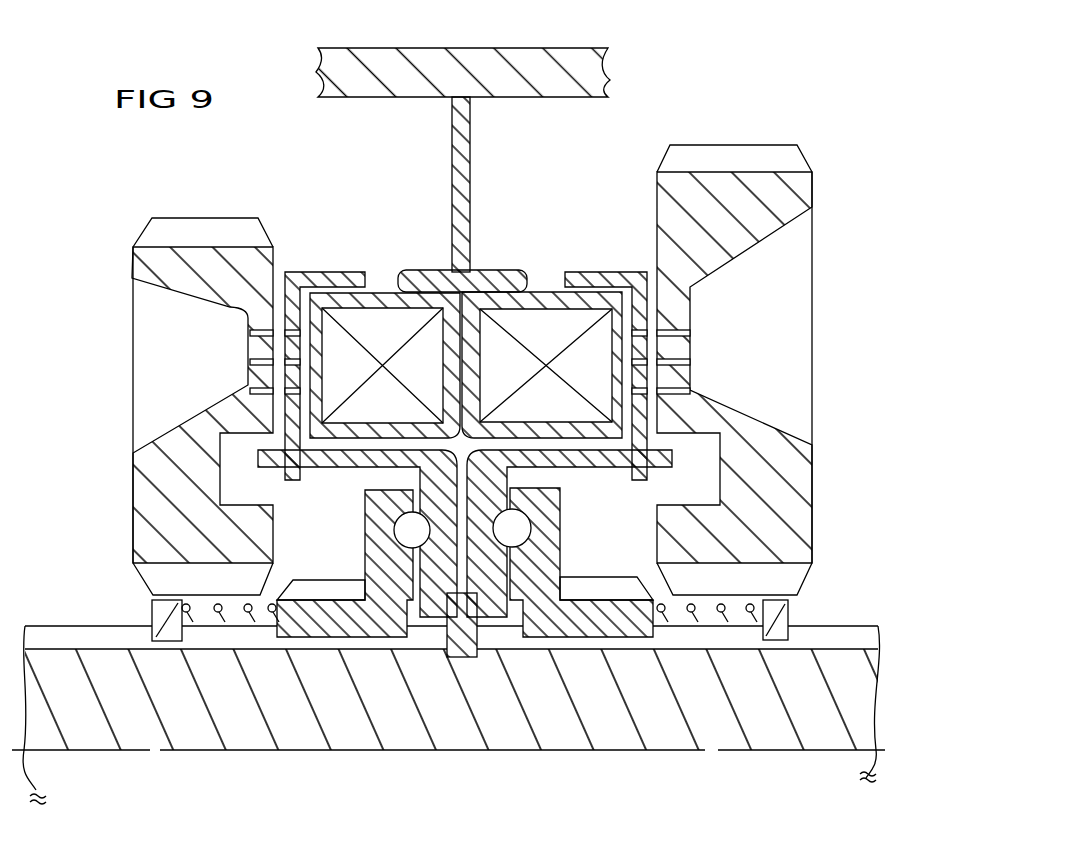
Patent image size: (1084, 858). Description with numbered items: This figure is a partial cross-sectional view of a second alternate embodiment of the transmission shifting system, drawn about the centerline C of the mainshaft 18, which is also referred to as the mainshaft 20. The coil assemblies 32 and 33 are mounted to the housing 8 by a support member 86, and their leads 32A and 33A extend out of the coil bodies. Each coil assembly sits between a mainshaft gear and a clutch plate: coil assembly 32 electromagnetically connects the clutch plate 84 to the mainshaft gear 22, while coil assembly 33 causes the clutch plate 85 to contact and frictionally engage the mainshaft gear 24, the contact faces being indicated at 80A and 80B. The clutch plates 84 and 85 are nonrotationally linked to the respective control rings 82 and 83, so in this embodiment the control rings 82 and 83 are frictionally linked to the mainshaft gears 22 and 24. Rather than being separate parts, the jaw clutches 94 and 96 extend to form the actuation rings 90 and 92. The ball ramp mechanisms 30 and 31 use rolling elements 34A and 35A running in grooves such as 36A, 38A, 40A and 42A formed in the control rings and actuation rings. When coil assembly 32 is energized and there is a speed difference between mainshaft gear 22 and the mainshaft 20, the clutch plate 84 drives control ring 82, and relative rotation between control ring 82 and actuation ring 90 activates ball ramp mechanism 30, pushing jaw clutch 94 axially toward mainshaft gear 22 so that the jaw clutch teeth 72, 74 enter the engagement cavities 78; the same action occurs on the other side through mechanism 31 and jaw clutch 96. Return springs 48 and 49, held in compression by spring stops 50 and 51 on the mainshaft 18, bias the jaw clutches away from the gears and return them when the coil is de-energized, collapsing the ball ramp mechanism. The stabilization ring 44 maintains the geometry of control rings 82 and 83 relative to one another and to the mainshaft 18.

The housing 8 is at (583, 63).
The support member 86 is at (458, 142).
The mainshaft gear 22 is at (140, 266).
The mainshaft gear 24 is at (800, 183).
The coil assembly 32 is at (342, 318).
The left coil lead 32A is at (372, 298).
The coil assembly 33 is at (578, 320).
The right coil lead 33A is at (548, 296).
The clutch plate 84 is at (291, 282).
The clutch plate 85 is at (633, 280).
The contact pads 80A is at (292, 362).
The contact pads 80B is at (258, 391).
The control ring 82 is at (330, 462).
The control ring 83 is at (582, 462).
The actuation ring 90 is at (372, 509).
The actuation ring 92 is at (553, 505).
The rolling element 34A is at (410, 530).
The rolling element 35A is at (518, 528).
The jaw clutch teeth 72 is at (348, 586).
The jaw clutch teeth 74 is at (290, 593).
The clutch engagement cavities 78 is at (262, 560).
The spring stop 50 is at (162, 612).
The spring stop 51 is at (780, 640).
The return spring 48 is at (215, 612).
The return spring 49 is at (695, 613).
The mainshaft 20 is at (838, 630).
The mainshaft 18 is at (652, 731).
The ball ramp mechanism 30 is at (345, 606).
The ball ramp mechanism 31 is at (581, 608).
The groove 36A is at (395, 612).
The groove 38A is at (440, 592).
The groove 40A is at (500, 592).
The groove 42A is at (545, 592).
The stabilization ring 44 is at (462, 640).
The jaw clutch 94 is at (300, 640).
The jaw clutch 96 is at (618, 622).
The center line C is at (716, 752).